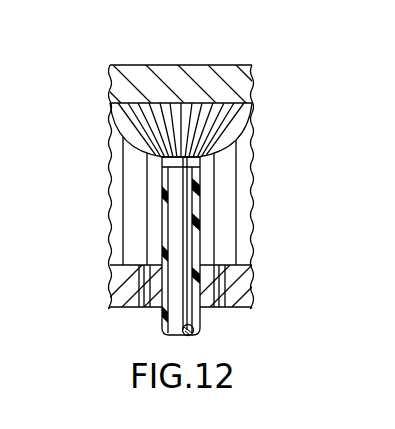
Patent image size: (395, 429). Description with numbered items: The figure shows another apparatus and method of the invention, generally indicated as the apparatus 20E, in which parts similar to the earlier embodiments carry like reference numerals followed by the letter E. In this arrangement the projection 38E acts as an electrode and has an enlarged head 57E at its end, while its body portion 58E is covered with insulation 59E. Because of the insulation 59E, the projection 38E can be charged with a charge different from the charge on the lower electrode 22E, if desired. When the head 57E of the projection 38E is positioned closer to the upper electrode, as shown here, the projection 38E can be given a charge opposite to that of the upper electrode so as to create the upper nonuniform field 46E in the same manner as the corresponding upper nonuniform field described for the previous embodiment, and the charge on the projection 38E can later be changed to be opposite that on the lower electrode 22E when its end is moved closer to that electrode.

The apparatus 20E is at (278, 72).
The upper nonuniform field 46E is at (220, 126).
The enlarged head 57E is at (162, 157).
The body portion 58E is at (168, 207).
The projection 38E is at (168, 238).
The insulation 59E is at (200, 243).
The lower electrode 22E is at (122, 282).